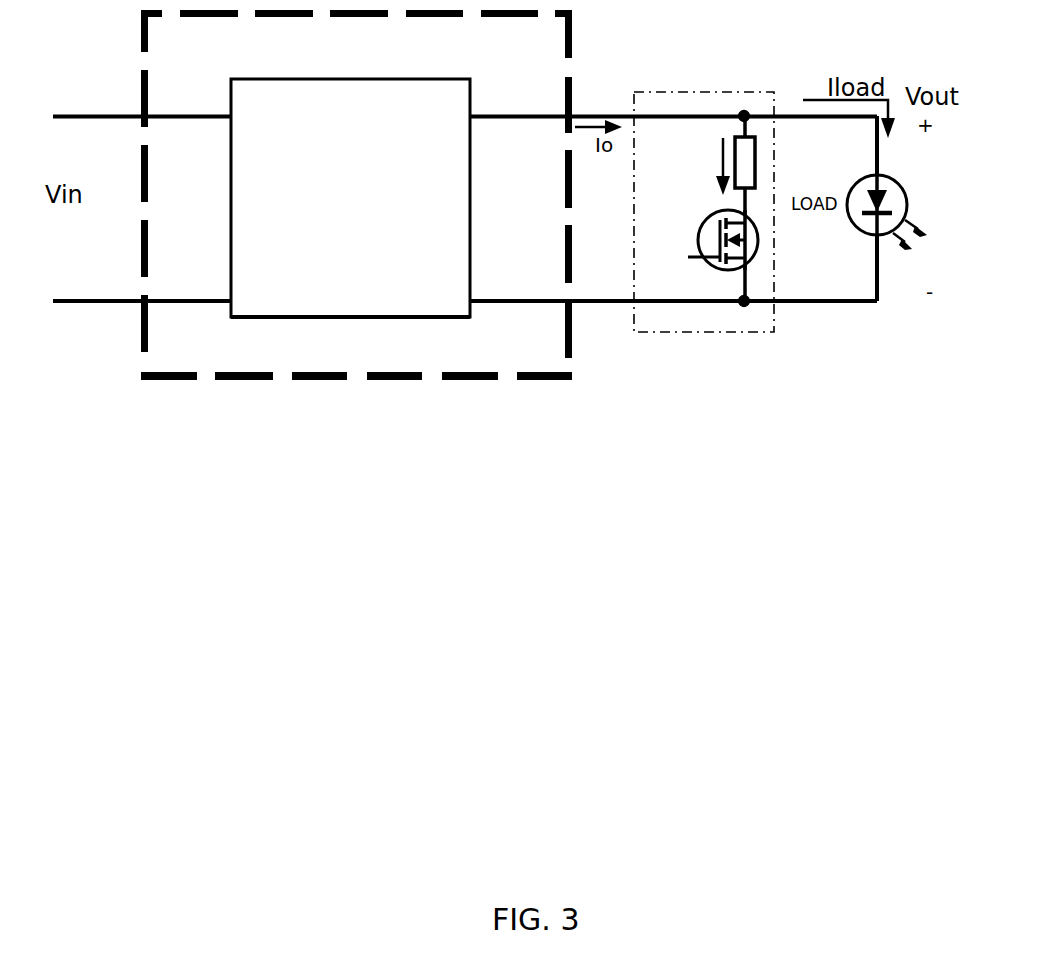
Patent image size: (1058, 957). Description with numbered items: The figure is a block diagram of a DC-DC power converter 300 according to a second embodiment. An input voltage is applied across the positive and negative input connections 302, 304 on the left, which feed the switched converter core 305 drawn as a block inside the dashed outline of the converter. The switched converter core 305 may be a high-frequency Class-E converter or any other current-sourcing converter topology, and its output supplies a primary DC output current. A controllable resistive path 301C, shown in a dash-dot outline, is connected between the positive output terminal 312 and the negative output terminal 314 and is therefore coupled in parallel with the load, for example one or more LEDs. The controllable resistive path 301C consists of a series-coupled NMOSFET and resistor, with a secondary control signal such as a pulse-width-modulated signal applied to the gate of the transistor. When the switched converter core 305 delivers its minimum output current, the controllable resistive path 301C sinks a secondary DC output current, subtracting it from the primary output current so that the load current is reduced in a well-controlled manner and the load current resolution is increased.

The DC-DC power converter 300 is at (180, 455).
The positive input terminal 302 is at (60, 112).
The negative input terminal 304 is at (55, 310).
The switched converter core 305 is at (270, 383).
The controllable resistive path 301C is at (671, 343).
The positive output terminal 312 is at (745, 110).
The negative output terminal 314 is at (748, 308).